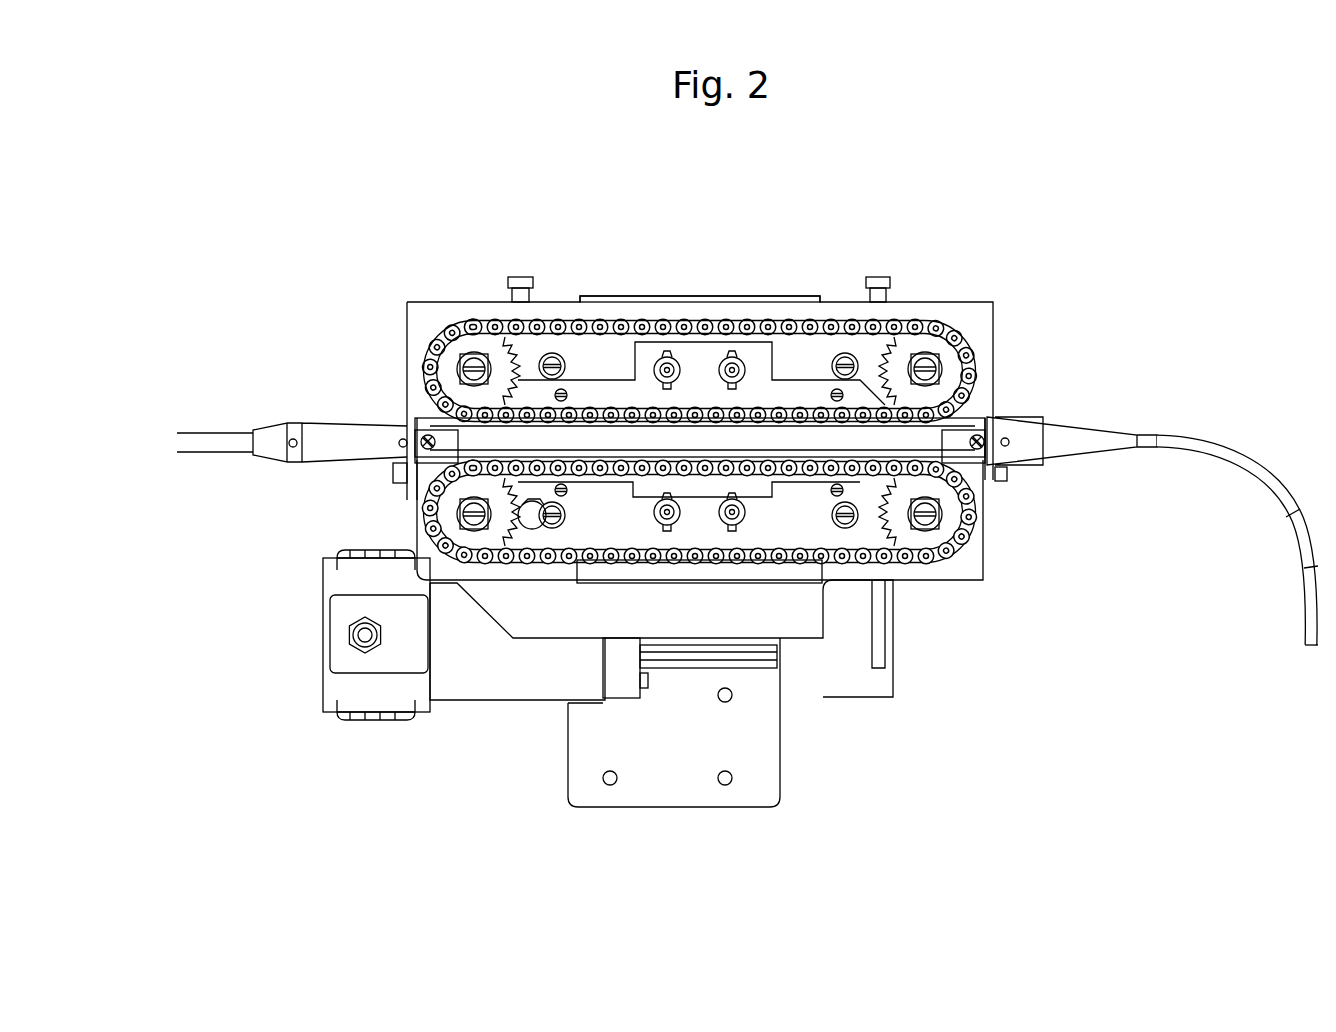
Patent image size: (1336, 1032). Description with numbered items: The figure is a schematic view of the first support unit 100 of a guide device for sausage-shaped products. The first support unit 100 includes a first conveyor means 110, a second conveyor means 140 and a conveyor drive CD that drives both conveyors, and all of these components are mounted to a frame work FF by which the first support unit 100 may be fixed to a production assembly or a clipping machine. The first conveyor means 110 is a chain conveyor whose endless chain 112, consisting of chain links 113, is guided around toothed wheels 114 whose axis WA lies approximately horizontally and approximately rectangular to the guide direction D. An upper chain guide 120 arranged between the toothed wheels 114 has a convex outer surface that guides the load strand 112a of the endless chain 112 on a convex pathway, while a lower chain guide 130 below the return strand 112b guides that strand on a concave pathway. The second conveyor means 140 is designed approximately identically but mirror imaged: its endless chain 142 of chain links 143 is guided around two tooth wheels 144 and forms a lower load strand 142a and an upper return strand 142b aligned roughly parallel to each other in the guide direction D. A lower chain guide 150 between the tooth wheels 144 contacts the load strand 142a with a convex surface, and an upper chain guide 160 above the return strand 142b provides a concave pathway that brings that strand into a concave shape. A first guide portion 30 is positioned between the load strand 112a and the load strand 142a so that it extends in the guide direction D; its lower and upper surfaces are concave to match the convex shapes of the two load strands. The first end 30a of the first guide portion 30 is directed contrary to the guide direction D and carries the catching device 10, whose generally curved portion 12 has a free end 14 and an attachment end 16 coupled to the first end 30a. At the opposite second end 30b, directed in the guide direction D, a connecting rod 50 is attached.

The first support unit 100 is at (1107, 230).
The second conveyor means 140 is at (382, 204).
The endless chain 142 is at (342, 264).
The load strand 142a is at (758, 417).
The return strand 142b is at (657, 333).
The chain links 143 is at (500, 323).
The tooth wheels 144 is at (517, 402).
The lower chain guide 150 is at (603, 392).
The upper chain guide 160 is at (728, 313).
The first guide portion 30 is at (833, 447).
The first end 30a is at (948, 437).
The second end 30b is at (458, 445).
The connecting rod 50 is at (355, 445).
The attachment end 16 is at (1073, 437).
The curved portion 12 is at (1275, 482).
The free end 14 is at (1320, 635).
The catching device 10 is at (1230, 382).
The first conveyor means 110 is at (1149, 696).
The endless chain 112 is at (1098, 546).
The load strand 112a is at (740, 470).
The return strand 112b is at (793, 558).
The chain links 113 is at (960, 552).
The toothed wheels 114 is at (947, 522).
The upper chain guide 120 is at (622, 487).
The lower chain guide 130 is at (648, 563).
The frame work FF is at (815, 730).
The conveyor drive CD is at (460, 672).
The axis WA is at (460, 367).
The guide direction D is at (322, 352).